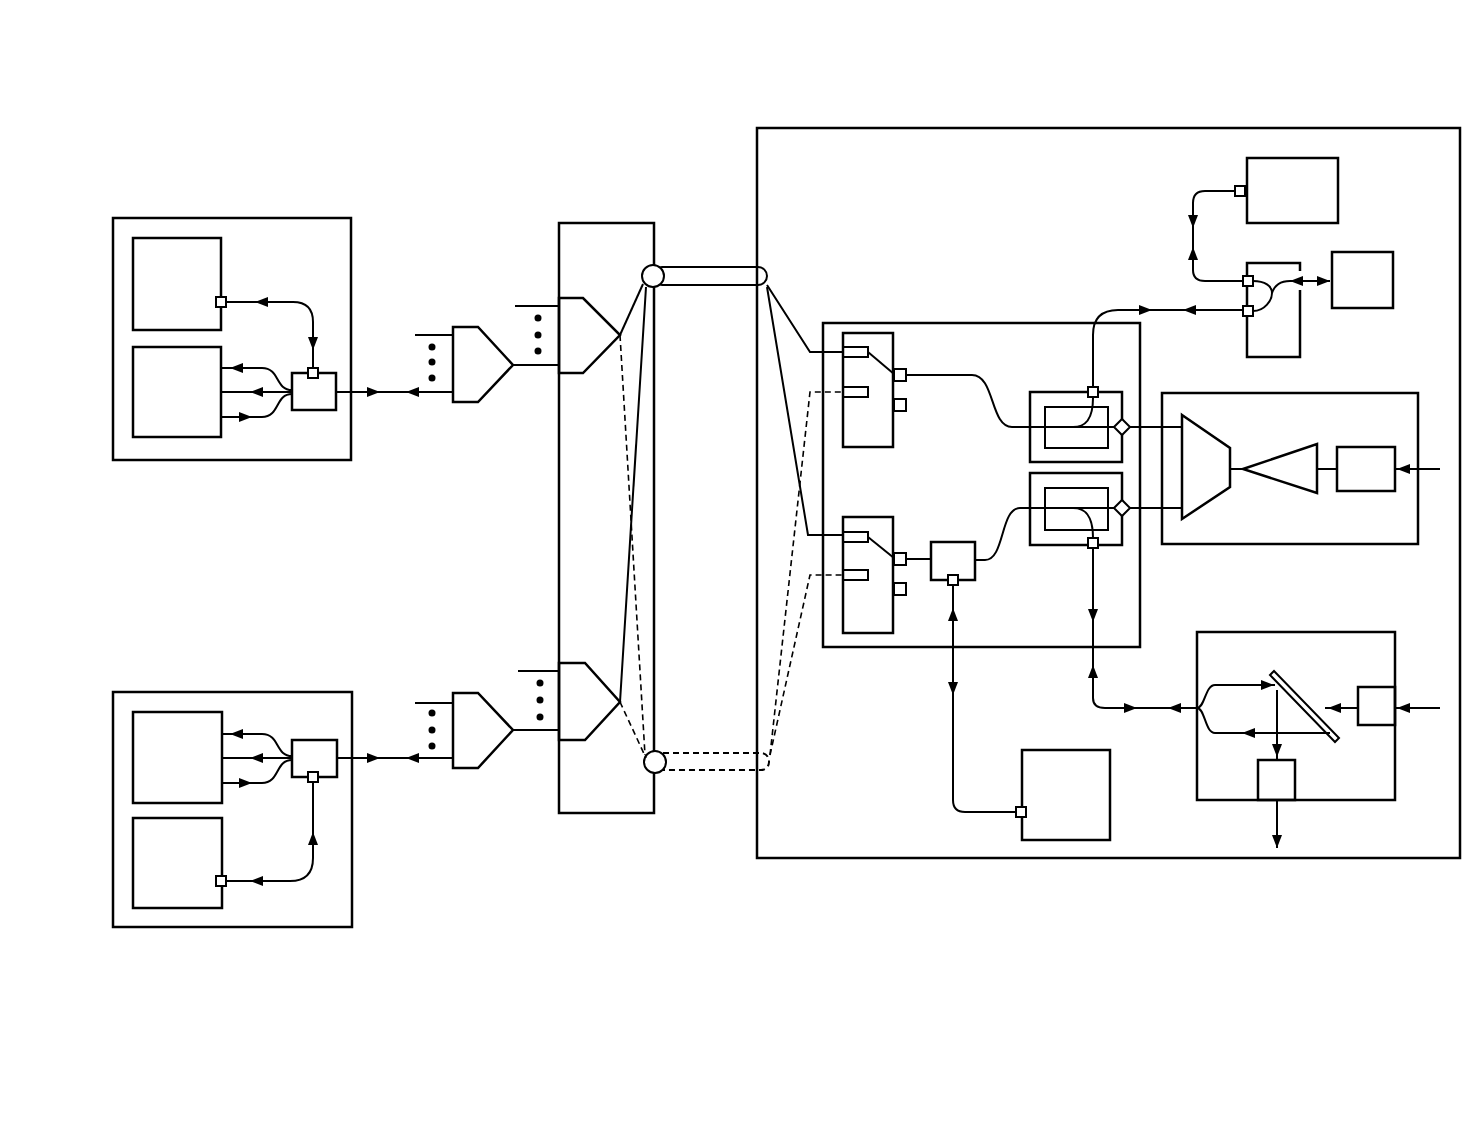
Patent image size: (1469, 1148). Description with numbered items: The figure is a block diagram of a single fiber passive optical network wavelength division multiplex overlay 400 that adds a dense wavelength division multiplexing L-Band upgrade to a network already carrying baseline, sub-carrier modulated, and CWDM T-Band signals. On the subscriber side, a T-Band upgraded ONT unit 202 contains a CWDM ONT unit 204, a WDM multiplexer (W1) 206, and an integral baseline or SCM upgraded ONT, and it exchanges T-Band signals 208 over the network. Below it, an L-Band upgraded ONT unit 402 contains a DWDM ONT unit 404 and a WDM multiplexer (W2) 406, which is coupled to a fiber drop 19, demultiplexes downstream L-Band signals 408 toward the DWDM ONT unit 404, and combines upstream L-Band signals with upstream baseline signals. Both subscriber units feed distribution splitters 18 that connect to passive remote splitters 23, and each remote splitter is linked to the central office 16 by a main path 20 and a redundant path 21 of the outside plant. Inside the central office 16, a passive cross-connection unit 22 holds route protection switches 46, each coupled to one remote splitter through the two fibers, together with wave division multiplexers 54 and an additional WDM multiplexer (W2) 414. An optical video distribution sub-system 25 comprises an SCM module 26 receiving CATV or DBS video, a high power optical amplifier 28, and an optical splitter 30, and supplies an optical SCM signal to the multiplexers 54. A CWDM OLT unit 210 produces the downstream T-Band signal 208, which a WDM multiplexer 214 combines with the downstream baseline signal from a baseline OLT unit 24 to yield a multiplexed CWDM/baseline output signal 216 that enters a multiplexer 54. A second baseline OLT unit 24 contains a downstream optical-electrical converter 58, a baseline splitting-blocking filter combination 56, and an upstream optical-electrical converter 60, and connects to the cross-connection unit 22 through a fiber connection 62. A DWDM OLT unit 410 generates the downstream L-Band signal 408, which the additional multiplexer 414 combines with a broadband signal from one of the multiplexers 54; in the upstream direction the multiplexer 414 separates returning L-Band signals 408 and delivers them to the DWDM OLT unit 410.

The single fiber passive optical network wavelength division multiplex overlay 400 is at (370, 105).
The central office 16 is at (1040, 128).
The T-Band upgraded ONT unit 202 is at (250, 218).
The CWDM ONT unit 204 is at (221, 264).
The downstream T-Band signal 208 is at (292, 298).
The WDM multiplexer (W1) 206 is at (313, 410).
The fiber drop 19 is at (402, 396).
The distribution splitter 18 is at (461, 327).
The passive remote splitter 23 is at (597, 304).
The main path 20 is at (700, 267).
The redundant path 21 is at (703, 770).
The passive cross-connection unit 22 is at (985, 323).
The route protection switch 46 is at (893, 435).
The wave division multiplexer 54 is at (1055, 400).
The WDM multiplexer (W2) 414 is at (950, 542).
The multiplexed CWDM/baseline output signal 216 is at (1170, 310).
The CWDM optical line termination unit 210 is at (1338, 190).
The WDM multiplexer 214 is at (1300, 325).
The baseline optical line termination unit 24 is at (1393, 283).
The optical video distribution sub-system 25 is at (1380, 393).
The optical splitter 30 is at (1215, 498).
The high power optical amplifier 28 is at (1283, 452).
The SCM module 26 is at (1360, 491).
The downstream optical-electrical converter 58 is at (1367, 687).
The baseline splitting-blocking filter combination 56 is at (1340, 725).
The upstream optical-electrical converter 60 is at (1295, 775).
The fiber connection 62 is at (1150, 710).
The downstream L-Band signal 408 is at (953, 745).
The DWDM optical line termination unit 410 is at (1060, 750).
The L-Band upgraded ONT unit 402 is at (250, 692).
The DWDM ONT unit 404 is at (222, 845).
The WDM multiplexer (W2) 406 is at (315, 740).